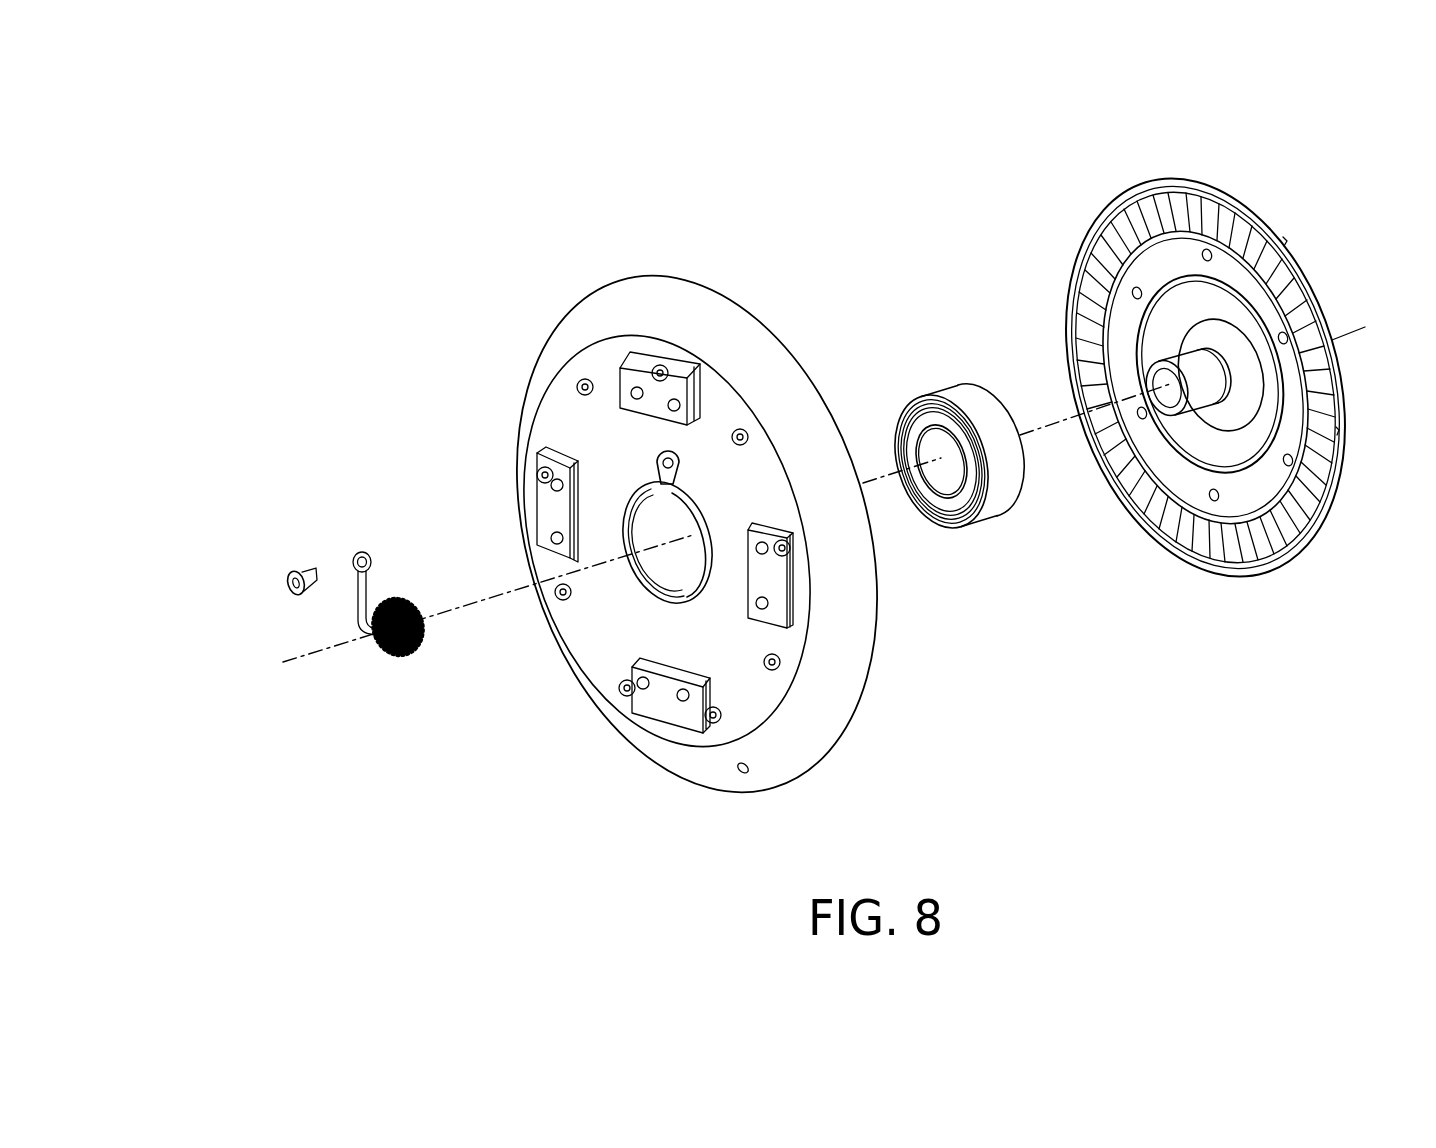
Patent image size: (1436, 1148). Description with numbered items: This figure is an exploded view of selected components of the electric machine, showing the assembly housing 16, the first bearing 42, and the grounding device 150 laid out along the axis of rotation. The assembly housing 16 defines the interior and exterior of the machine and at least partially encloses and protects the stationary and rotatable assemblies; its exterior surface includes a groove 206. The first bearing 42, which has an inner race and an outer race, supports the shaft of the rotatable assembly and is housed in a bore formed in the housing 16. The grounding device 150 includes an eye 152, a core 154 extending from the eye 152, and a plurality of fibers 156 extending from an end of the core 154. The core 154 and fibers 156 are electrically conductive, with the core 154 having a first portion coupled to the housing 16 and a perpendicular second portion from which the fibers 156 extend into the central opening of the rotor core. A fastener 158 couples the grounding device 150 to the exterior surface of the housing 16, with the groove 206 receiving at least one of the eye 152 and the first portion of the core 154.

The assembly housing 16 is at (660, 297).
The first bearing 42 is at (963, 395).
The groove 206 is at (675, 457).
The grounding device 150 is at (373, 652).
The eye 152 is at (366, 552).
The core 154 is at (357, 603).
The fibers 156 is at (410, 653).
The fastener 158 is at (305, 568).